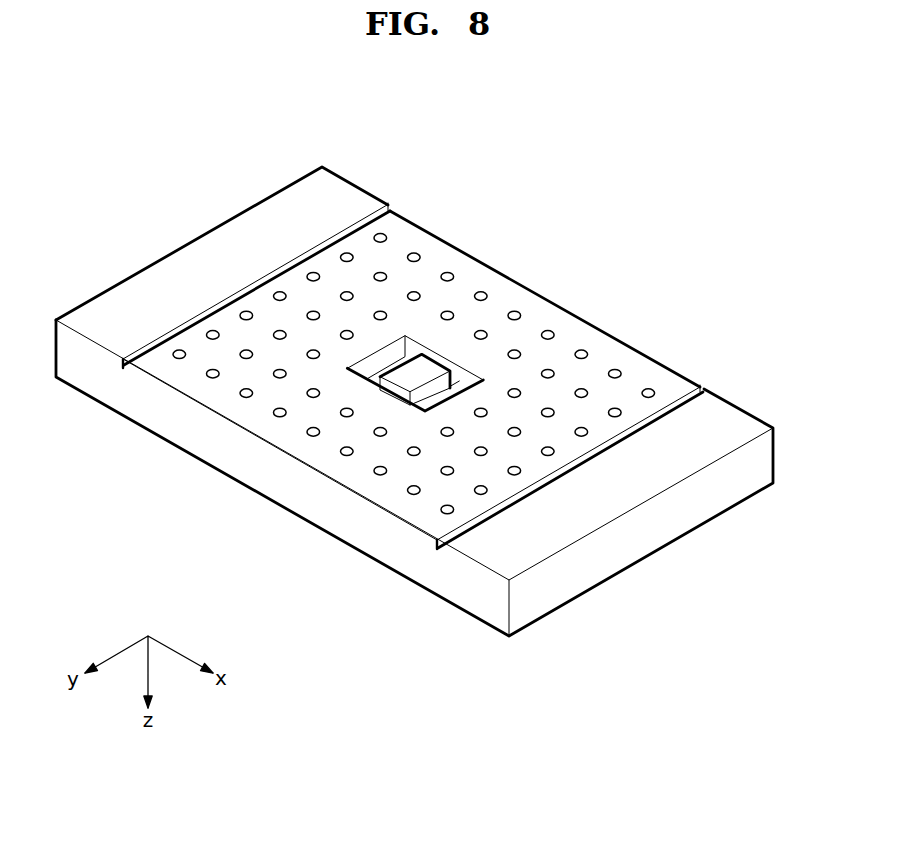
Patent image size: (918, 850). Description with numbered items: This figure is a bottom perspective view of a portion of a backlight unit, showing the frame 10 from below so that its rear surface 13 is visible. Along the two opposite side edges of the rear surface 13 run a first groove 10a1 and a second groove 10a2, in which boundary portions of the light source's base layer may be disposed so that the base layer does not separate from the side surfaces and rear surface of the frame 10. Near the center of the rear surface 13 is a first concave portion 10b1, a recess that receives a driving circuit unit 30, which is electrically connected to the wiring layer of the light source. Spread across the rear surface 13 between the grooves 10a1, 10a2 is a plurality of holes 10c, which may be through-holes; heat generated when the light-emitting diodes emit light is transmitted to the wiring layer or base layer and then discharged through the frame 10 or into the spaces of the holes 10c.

The frame 10 is at (684, 224).
The first groove 10a1 is at (708, 383).
The second groove 10a2 is at (397, 203).
The first concave portion 10b1 is at (463, 380).
The holes 10c is at (620, 371).
The rear surface 13 is at (407, 472).
The driving circuit unit 30 is at (425, 367).